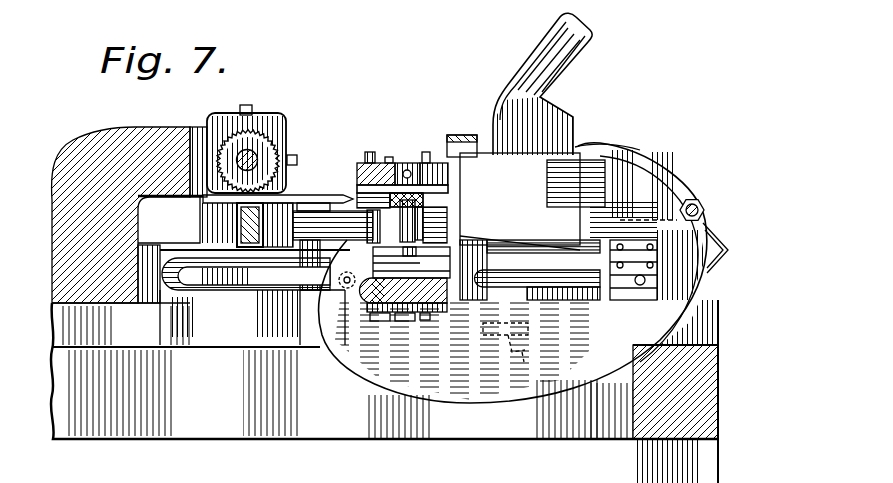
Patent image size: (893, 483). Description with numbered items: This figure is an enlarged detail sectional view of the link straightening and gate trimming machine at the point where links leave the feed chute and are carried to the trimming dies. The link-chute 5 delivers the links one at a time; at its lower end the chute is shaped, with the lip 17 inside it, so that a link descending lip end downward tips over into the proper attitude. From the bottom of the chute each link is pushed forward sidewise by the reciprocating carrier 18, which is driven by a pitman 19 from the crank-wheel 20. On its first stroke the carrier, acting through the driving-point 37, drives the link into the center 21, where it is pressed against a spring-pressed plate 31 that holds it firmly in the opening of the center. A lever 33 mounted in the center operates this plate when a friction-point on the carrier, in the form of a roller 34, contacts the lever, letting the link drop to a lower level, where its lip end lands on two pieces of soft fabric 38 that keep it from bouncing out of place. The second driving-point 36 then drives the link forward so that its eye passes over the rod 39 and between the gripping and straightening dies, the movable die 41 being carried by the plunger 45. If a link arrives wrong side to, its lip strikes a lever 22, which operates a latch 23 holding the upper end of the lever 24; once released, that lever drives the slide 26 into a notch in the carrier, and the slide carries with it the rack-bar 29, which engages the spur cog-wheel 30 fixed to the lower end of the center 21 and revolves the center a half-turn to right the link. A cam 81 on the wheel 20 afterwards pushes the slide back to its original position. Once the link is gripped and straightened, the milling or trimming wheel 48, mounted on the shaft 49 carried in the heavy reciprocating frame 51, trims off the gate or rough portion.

The reciprocating frame 51 is at (96, 152).
The milling or trimming wheel 48 is at (253, 140).
The shaft 49 is at (258, 154).
The rod 39 is at (310, 196).
The plunger 45 is at (208, 214).
The gripping and straightening die 41 is at (250, 252).
The spring-pressed plate 31 is at (407, 163).
The lever 24 is at (370, 152).
The latch 23 is at (412, 160).
The lever 22 is at (442, 150).
The pieces of soft fabric 38 is at (457, 188).
The second driving-point 36 is at (432, 223).
The lever 33 is at (395, 221).
The roller 34 is at (411, 259).
The spur cog-wheel 30 is at (428, 305).
The rack-bar 29 is at (372, 317).
The slide 26 is at (393, 327).
The center 21 is at (435, 300).
The lip 17 is at (490, 132).
The link-chute 5 is at (572, 60).
The reciprocating carrier 18 is at (662, 157).
The driving-point 37 is at (608, 152).
The crank-wheel 20 is at (640, 153).
The pitman 19 is at (667, 212).
The cam 81 is at (730, 248).